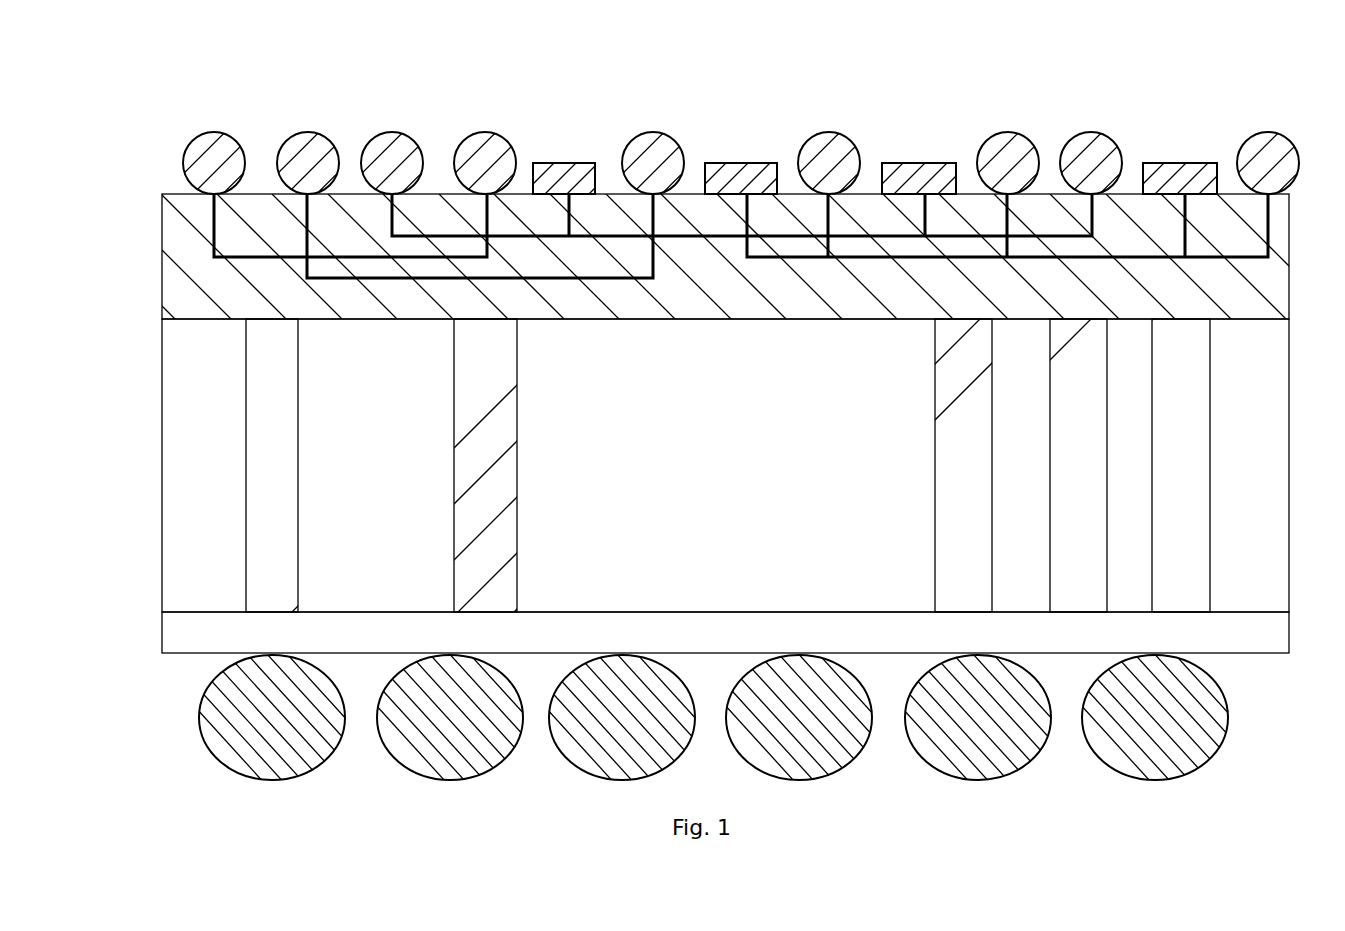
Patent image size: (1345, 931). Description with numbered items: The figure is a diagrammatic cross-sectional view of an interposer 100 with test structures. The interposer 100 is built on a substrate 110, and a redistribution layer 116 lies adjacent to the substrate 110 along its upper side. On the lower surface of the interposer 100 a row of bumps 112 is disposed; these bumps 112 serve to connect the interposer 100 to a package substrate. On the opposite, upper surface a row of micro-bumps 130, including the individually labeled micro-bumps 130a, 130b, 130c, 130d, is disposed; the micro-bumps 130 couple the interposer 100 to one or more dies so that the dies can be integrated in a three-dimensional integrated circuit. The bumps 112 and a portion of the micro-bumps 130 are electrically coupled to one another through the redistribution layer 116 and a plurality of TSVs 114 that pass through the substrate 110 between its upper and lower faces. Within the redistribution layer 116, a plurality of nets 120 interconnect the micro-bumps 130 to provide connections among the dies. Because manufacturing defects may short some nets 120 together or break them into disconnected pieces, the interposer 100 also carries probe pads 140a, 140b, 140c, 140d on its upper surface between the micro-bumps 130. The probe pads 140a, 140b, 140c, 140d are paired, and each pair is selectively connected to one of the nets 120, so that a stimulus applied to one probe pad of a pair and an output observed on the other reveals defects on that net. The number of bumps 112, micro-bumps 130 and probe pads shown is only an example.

The interposer 100 is at (576, 72).
The substrate 110 is at (395, 480).
The bumps 112 is at (250, 770).
The TSVs 114 is at (288, 542).
The redistribution layer 116 is at (170, 225).
The nets 120 is at (213, 243).
The micro-bumps 130 is at (156, 153).
The micro-bump 130a is at (382, 137).
The micro-bump 130b is at (848, 135).
The micro-bump 130c is at (1110, 136).
The micro-bump 130d is at (1282, 135).
The probe pad 140a is at (558, 163).
The probe pad 140b is at (762, 163).
The probe pad 140c is at (940, 163).
The probe pad 140d is at (1205, 163).